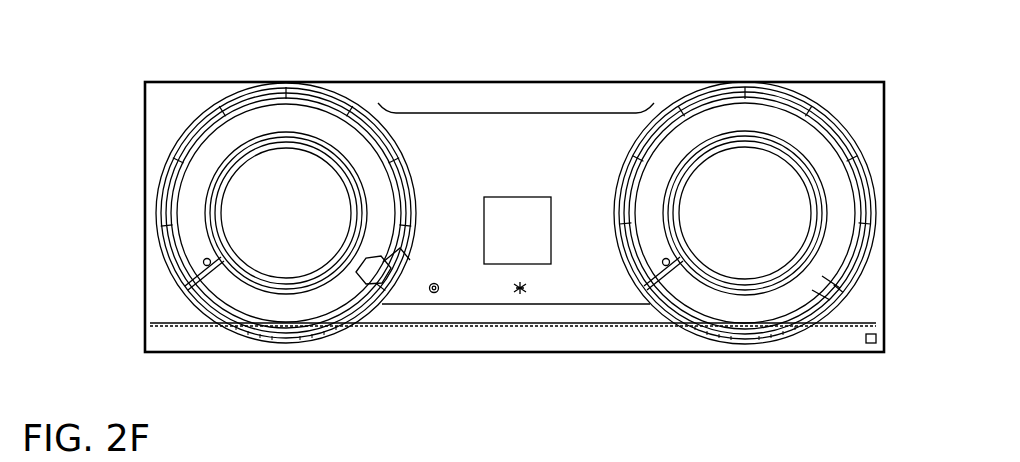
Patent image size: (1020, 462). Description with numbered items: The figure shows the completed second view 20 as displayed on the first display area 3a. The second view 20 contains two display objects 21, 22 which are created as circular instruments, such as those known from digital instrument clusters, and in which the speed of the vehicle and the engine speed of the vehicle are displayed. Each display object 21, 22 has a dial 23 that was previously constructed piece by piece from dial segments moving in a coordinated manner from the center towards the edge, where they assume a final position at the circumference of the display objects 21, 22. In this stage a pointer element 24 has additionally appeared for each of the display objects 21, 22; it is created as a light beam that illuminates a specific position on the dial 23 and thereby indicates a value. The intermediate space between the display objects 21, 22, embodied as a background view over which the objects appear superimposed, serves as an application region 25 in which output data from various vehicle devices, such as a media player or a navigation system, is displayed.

The second view 20 is at (142, 109).
The display object 21 is at (307, 82).
The display object 22 is at (805, 100).
The dial 23 is at (212, 110).
The pointer element 24 is at (188, 275).
The application region 25 is at (587, 156).
The first display area 3a is at (397, 82).